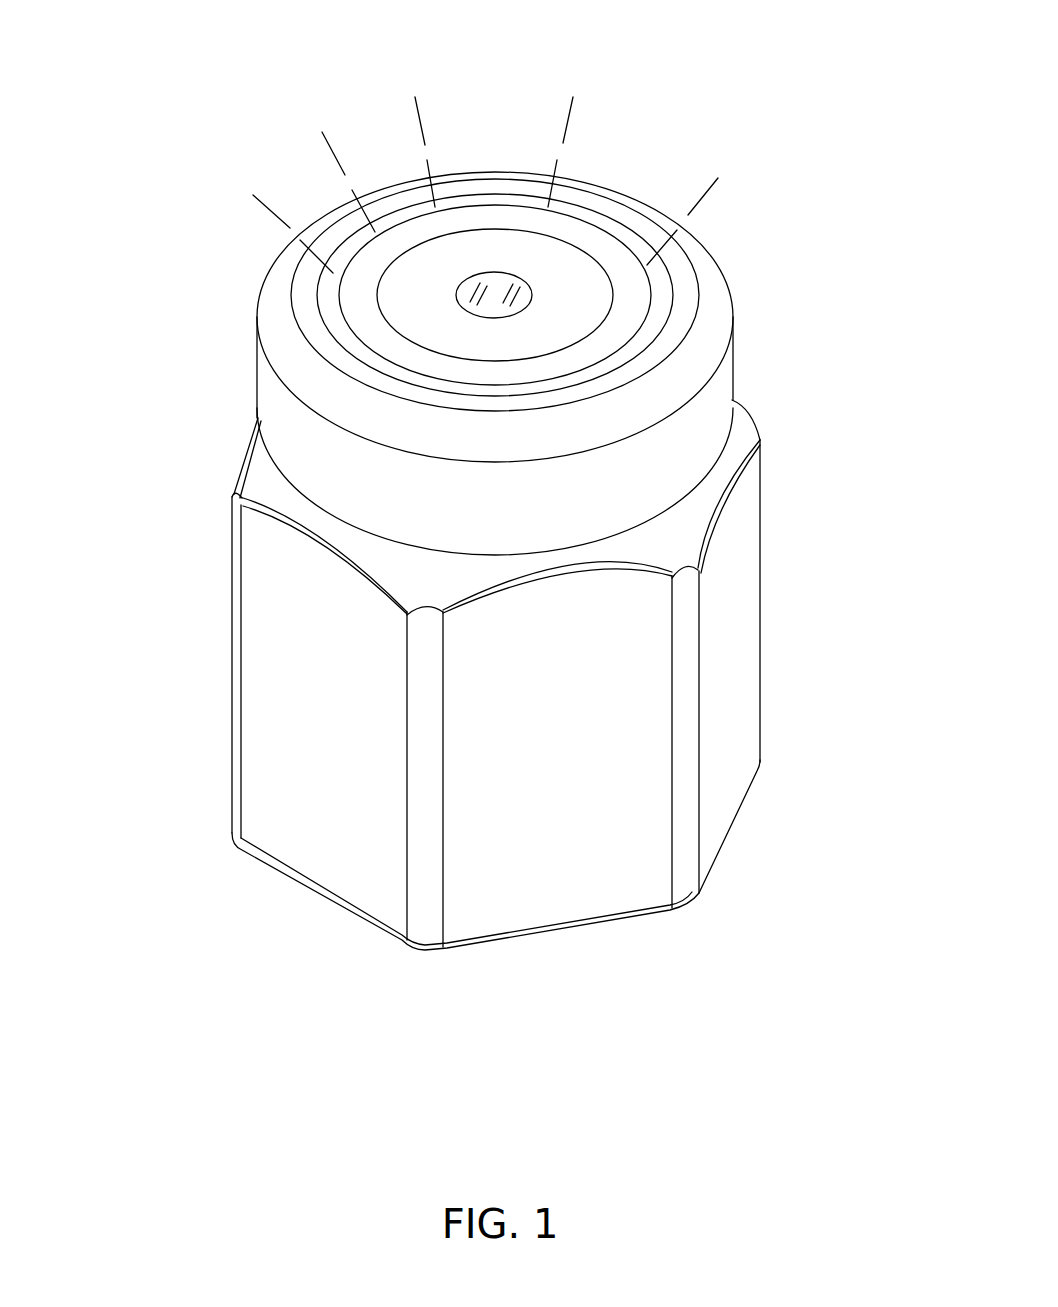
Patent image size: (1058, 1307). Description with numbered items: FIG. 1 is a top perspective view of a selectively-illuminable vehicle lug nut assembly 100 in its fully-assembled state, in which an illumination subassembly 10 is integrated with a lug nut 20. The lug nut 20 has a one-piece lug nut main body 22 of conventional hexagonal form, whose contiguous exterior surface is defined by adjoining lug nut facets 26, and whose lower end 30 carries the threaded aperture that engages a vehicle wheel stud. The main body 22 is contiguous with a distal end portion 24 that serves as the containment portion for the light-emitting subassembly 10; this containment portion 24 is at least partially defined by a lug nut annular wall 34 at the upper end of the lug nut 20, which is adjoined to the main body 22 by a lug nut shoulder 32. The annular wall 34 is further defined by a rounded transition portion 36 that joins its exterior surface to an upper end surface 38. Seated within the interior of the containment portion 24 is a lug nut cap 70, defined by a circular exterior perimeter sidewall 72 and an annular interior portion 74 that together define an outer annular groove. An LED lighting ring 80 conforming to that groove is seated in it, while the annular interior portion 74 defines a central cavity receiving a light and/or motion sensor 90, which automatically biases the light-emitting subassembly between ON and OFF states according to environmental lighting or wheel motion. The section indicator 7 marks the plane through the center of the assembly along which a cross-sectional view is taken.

The illuminable lug nut assembly 100 is at (193, 84).
The illumination subassembly 10 is at (585, 156).
The lug nut 20 is at (854, 449).
The lug nut main body 22 is at (213, 625).
The distal end portion 24 is at (240, 378).
The facets 26 is at (537, 781).
The lower end 30 is at (712, 867).
The lug nut shoulder 32 is at (262, 484).
The lug nut annular wall 34 is at (487, 516).
The rounded transition portion 36 is at (703, 348).
The upper end surface 38 is at (684, 317).
The lug nut cap 70 is at (545, 252).
The circular exterior perimeter sidewall 72 is at (333, 290).
The annular interior portion 74 is at (343, 225).
The LED lighting ring 80 is at (617, 260).
The light and/or motion sensor 90 is at (473, 277).
The section line 7- 7 is at (494, 290).